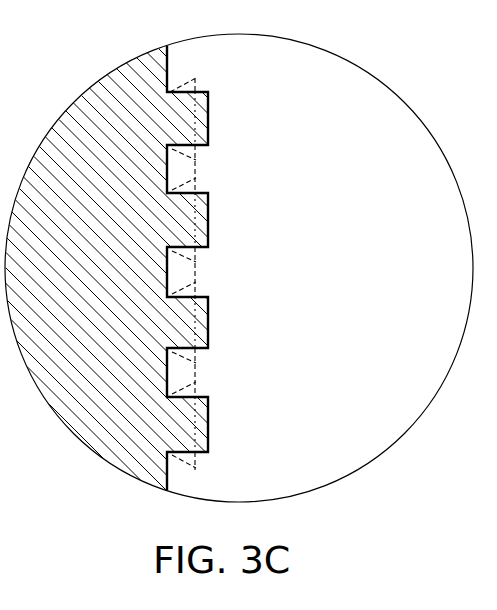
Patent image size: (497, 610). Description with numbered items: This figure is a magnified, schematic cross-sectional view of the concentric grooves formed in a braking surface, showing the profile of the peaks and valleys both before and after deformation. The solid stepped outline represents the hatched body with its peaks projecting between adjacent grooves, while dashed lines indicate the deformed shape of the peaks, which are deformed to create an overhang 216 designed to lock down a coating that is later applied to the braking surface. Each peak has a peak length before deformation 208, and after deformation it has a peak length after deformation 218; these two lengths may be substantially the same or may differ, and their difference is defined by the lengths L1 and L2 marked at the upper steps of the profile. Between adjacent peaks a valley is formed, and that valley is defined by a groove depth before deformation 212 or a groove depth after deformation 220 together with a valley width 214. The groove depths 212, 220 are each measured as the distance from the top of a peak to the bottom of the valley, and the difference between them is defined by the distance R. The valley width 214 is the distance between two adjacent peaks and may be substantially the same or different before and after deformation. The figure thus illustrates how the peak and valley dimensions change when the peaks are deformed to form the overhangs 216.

The peak length before deformation 208 is at (208, 193).
The groove depth before deformation 212 is at (120, 331).
The valley width 214 is at (122, 247).
The overhang 216 is at (168, 166).
The peak length after deformation 218 is at (200, 180).
The groove depth after deformation 220 is at (120, 423).
The distance R is at (150, 373).
The length L1 is at (205, 78).
The length L2 is at (210, 145).